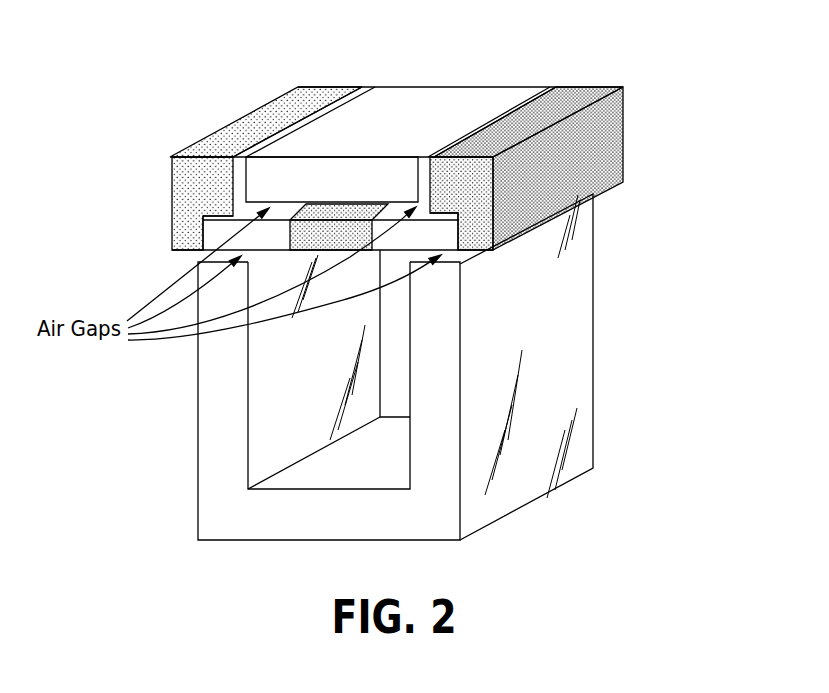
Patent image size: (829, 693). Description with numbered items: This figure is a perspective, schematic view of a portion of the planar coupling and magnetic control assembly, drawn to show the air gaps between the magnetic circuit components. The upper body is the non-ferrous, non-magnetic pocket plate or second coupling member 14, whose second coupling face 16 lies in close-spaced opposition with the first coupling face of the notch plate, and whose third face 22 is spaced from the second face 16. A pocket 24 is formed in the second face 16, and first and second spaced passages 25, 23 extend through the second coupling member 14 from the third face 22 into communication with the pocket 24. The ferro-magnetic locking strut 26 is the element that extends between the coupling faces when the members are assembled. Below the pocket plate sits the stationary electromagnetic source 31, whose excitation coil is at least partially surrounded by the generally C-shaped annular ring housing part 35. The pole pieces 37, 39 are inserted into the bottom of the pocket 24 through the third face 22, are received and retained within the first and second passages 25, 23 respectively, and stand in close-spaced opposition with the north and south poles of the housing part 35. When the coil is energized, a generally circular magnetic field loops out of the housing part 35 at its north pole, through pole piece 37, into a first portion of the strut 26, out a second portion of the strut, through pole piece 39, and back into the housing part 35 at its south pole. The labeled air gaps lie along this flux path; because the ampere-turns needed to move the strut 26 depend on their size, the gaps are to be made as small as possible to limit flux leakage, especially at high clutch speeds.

The second coupling member 14 is at (647, 118).
The second coupling face 16 is at (575, 95).
The third face 22 is at (187, 252).
The second passage 23 is at (228, 210).
The pocket 24 is at (242, 180).
The first passage 25 is at (458, 226).
The locking strut 26 is at (423, 80).
The stationary electromagnetic source 31 is at (627, 329).
The annular ring housing part 35 is at (596, 426).
The pole piece 37 is at (222, 240).
The pole piece 39 is at (416, 236).